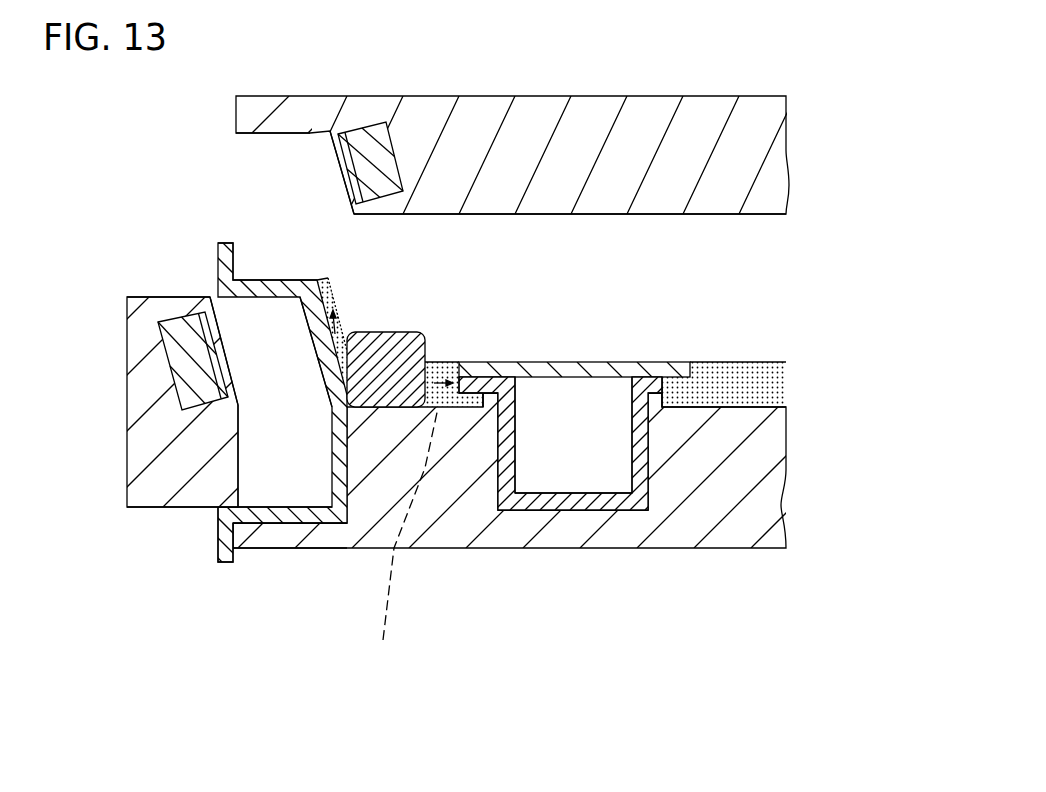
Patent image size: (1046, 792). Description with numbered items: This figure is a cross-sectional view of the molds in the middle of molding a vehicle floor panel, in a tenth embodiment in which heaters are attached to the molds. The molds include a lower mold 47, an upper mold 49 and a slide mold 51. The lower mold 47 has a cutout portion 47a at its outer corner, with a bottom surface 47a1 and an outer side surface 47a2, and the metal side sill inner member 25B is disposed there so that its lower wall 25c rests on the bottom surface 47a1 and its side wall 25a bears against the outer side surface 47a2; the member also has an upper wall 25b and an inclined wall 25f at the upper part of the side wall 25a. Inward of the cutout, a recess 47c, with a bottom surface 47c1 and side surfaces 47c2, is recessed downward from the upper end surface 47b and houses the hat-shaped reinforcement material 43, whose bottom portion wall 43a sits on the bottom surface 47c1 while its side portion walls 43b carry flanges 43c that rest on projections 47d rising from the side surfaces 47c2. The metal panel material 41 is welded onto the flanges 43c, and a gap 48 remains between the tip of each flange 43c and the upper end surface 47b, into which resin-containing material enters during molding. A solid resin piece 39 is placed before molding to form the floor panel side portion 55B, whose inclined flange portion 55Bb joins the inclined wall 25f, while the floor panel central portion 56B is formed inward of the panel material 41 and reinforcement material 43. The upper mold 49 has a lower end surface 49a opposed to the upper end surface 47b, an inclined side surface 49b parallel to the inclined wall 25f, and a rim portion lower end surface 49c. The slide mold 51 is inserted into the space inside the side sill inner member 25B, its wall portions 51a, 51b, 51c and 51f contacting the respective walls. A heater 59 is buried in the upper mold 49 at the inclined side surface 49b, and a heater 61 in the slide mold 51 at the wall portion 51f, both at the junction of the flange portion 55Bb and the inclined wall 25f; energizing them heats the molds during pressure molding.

The side sill inner member 25B is at (258, 550).
The side wall 25a is at (344, 524).
The upper wall 25b is at (272, 285).
The lower wall 25c is at (217, 537).
The inclined wall 25f is at (310, 335).
The resin piece 39 is at (380, 332).
The panel material 41 is at (582, 362).
The reinforcement material 43 is at (592, 508).
The bottom portion wall 43a is at (570, 510).
The side portion walls 43b is at (527, 377).
The flanges 43c is at (468, 385).
The lower mold 47 is at (441, 530).
The cutout portion 47a is at (353, 675).
The bottom surface 47a1 is at (275, 548).
The outer side surface 47a2 is at (308, 548).
The upper end surface 47b is at (476, 400).
The recess 47c is at (617, 640).
The bottom surface 47c1 is at (538, 500).
The side surfaces 47c2 is at (513, 505).
The projections 47d is at (485, 392).
The gap 48 is at (470, 380).
The upper mold 49 is at (543, 120).
The lower end surface 49a is at (549, 215).
The inclined side surface 49b is at (333, 162).
The rim portion lower end surface 49c is at (292, 134).
The slide mold 51 is at (214, 363).
The wall portion 51a is at (240, 447).
The wall portion 51b is at (166, 297).
The wall portion 51c is at (173, 508).
The wall portion 51f is at (237, 383).
The floor panel side portion 55B is at (403, 543).
The flange portion 55Bb is at (334, 288).
The floor panel central portion 56B is at (790, 384).
The heater 59 is at (352, 124).
The heater 61 is at (176, 300).